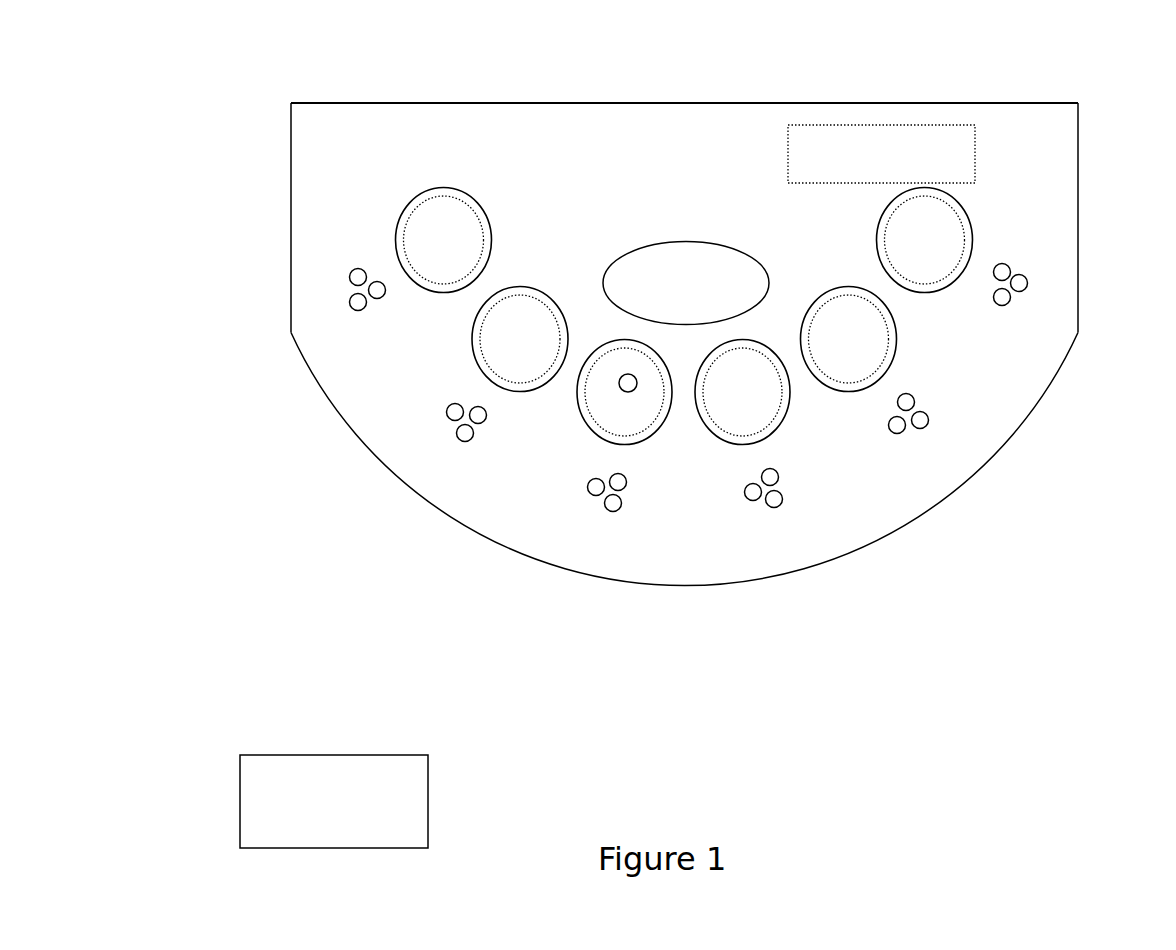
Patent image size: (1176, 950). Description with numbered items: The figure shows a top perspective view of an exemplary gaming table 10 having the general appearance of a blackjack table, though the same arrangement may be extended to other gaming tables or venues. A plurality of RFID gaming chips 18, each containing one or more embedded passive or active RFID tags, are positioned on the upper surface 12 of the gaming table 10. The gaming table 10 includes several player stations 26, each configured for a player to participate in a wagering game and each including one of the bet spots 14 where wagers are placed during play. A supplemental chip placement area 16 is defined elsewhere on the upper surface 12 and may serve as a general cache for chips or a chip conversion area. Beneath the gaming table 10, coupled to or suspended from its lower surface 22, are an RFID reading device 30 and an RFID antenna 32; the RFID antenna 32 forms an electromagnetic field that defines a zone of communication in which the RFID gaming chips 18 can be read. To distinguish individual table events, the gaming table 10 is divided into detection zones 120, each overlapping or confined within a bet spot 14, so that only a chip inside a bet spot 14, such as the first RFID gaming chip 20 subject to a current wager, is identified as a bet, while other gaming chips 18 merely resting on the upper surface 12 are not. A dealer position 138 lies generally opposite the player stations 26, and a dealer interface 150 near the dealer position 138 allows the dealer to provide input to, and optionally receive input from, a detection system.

The gaming table 10 is at (627, 393).
The upper surface 12 is at (627, 393).
The bet spot 14 is at (420, 194).
The supplemental chip placement area 16 is at (759, 303).
The RFID gaming chip 18 is at (352, 304).
The first RFID gaming chip 20 is at (624, 375).
The lower surface 22 is at (752, 607).
The player station 26 is at (332, 296).
The RFID reading device 30 is at (334, 801).
The RFID antenna 32 is at (378, 783).
The detection zone 120 is at (420, 272).
The dealer position 138 is at (688, 103).
The dealer interface 150 is at (819, 125).